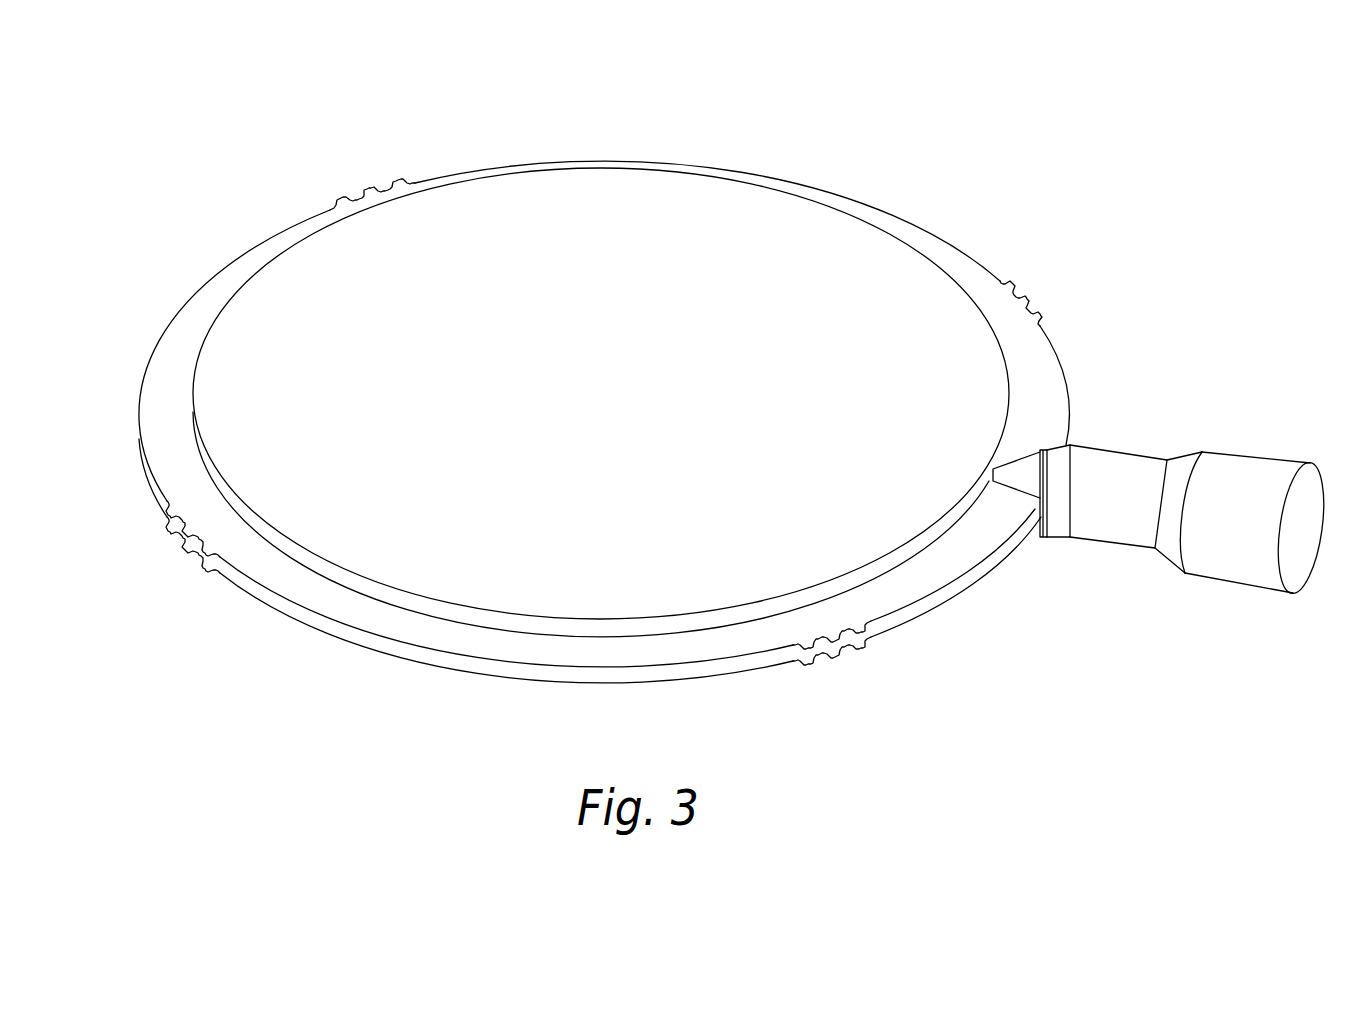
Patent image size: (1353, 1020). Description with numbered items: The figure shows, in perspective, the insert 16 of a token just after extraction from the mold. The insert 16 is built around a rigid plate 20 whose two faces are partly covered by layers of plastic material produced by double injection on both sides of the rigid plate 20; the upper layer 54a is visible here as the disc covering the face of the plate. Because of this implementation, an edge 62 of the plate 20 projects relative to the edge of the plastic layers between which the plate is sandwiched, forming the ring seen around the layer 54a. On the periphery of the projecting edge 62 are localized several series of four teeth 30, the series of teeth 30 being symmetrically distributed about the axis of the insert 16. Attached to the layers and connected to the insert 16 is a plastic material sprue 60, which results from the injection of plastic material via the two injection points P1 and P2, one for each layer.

The insert 16 is at (890, 190).
The rigid plate 20 is at (460, 636).
The teeth 30 is at (370, 169).
The layer of plastic material 54a is at (620, 400).
The plastic material sprue 60 is at (1237, 601).
The edge of the plate 62 is at (222, 292).
The injection point P1 is at (1028, 462).
The injection point P2 is at (1038, 537).